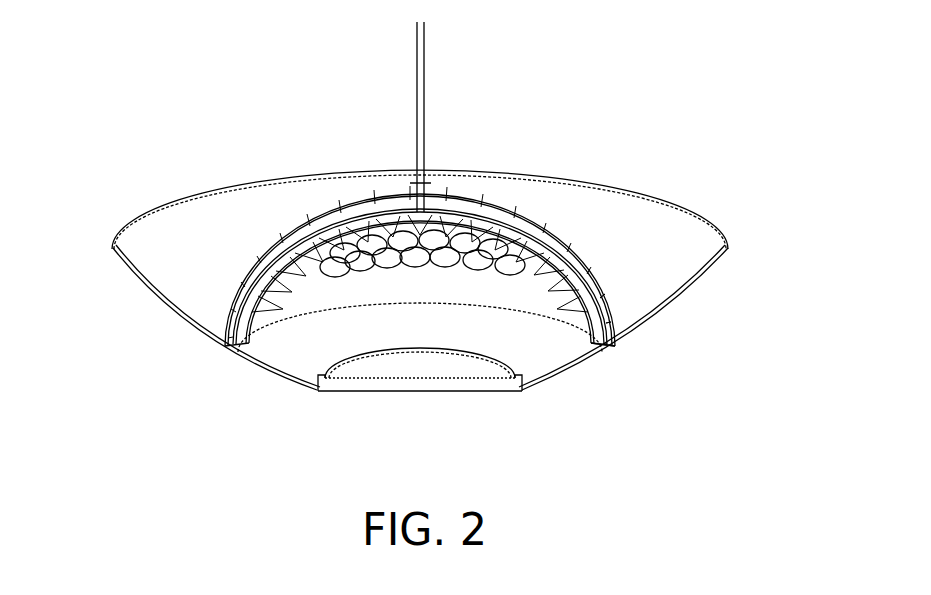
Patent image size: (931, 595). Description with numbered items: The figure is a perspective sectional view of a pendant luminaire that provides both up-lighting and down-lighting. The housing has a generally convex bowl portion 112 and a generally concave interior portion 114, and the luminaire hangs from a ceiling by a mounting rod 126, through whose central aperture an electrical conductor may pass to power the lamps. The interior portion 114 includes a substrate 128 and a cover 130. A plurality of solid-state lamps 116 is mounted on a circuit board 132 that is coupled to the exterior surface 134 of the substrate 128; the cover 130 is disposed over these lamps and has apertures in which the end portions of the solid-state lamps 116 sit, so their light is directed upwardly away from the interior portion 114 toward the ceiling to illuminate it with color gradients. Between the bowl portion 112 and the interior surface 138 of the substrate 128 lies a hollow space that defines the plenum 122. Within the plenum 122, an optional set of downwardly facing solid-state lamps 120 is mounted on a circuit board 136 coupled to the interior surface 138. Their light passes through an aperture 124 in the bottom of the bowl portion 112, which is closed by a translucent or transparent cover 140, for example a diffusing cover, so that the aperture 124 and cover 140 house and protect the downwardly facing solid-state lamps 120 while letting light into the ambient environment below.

The bowl portion 112 is at (152, 292).
The interior portion 114 is at (222, 290).
The solid-state lamps 116 is at (287, 228).
The downwardly facing solid-state lamps 120 is at (390, 262).
The plenum 122 is at (280, 351).
The aperture 124 is at (356, 389).
The mounting rod 126 is at (417, 103).
The substrate 128 is at (625, 340).
The cover 130 is at (441, 183).
The circuit board 132 is at (577, 285).
The exterior surface 134 is at (603, 322).
The circuit board 136 is at (575, 298).
The interior surface 138 is at (580, 320).
The cover 140 is at (423, 385).